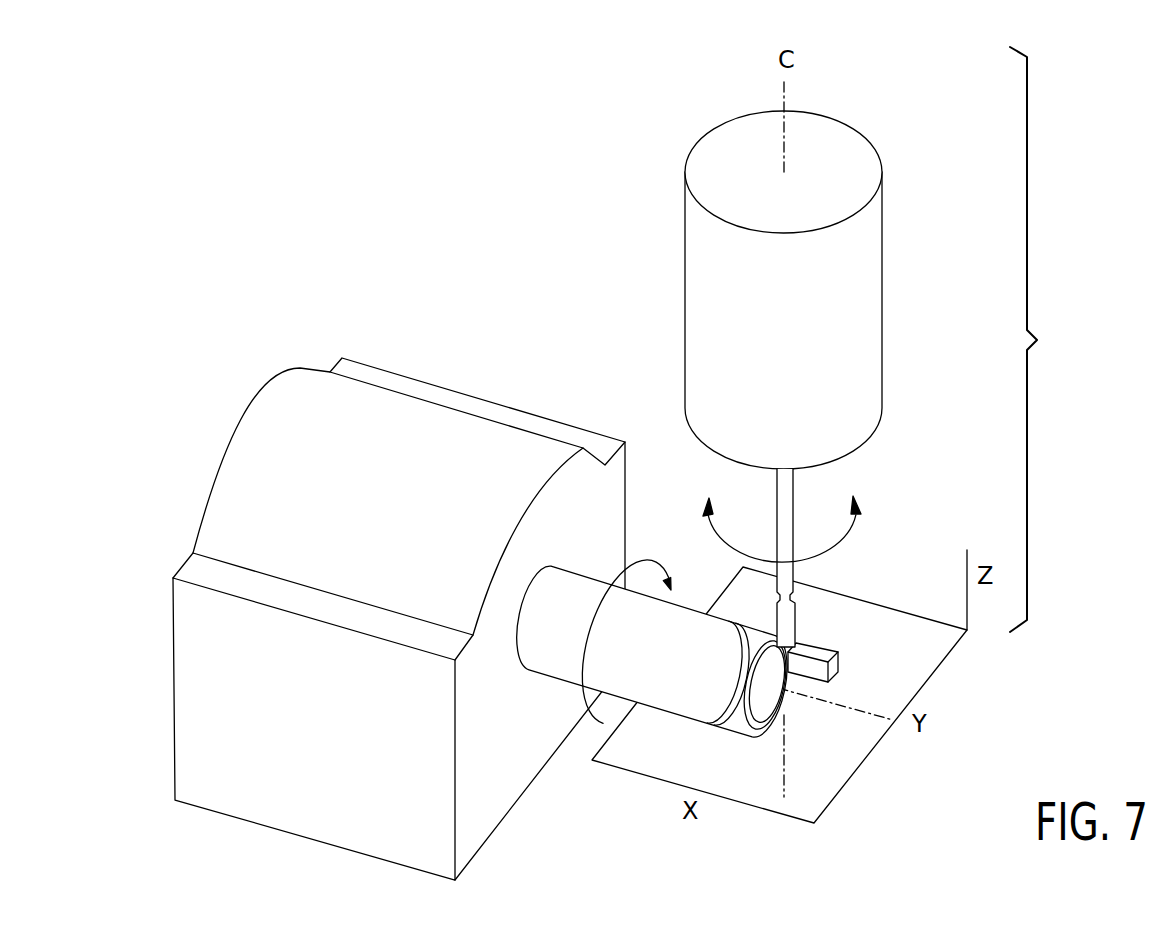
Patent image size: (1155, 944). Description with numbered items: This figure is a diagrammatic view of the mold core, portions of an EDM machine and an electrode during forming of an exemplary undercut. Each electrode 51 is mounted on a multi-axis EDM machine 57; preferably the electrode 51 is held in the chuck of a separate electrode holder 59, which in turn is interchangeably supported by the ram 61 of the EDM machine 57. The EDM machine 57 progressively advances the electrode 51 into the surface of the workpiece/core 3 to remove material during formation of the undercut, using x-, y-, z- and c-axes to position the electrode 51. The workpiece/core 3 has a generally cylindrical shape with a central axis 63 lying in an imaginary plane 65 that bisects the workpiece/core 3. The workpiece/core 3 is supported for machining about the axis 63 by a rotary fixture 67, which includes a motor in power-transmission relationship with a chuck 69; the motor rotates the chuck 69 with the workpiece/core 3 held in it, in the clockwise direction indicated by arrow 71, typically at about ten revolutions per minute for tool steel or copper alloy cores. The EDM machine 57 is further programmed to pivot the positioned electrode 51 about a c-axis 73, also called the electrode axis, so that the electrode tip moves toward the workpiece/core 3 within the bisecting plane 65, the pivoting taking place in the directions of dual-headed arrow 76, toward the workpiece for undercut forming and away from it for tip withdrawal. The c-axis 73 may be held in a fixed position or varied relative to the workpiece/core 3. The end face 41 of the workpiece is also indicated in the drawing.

The workpiece/core 3 is at (660, 726).
The end face of workpiece 41 is at (765, 705).
The electrode 51 is at (836, 664).
The EDM machine 57 is at (1037, 340).
The electrode holder 59 is at (795, 570).
The ram 61 is at (870, 322).
The central axis 63 is at (862, 707).
The imaginary plane 65 is at (850, 750).
The rotary fixture 67 is at (487, 398).
The chuck 69 is at (510, 617).
The arrow 71 is at (650, 558).
The c-axis 73 is at (784, 95).
The dual-headed arrow 76 is at (858, 516).